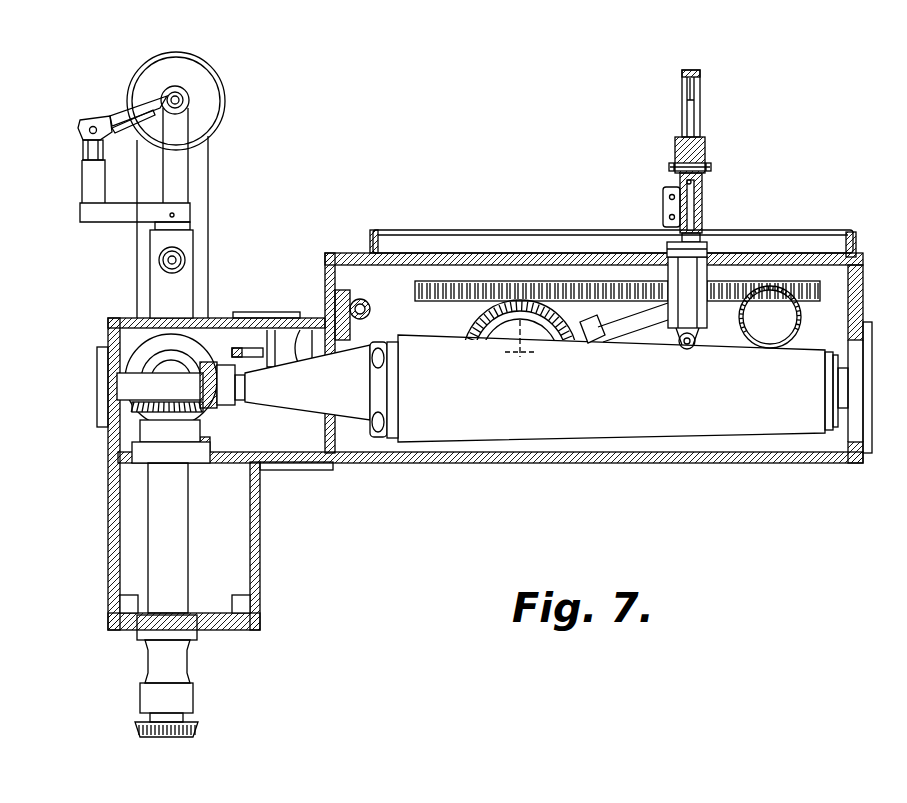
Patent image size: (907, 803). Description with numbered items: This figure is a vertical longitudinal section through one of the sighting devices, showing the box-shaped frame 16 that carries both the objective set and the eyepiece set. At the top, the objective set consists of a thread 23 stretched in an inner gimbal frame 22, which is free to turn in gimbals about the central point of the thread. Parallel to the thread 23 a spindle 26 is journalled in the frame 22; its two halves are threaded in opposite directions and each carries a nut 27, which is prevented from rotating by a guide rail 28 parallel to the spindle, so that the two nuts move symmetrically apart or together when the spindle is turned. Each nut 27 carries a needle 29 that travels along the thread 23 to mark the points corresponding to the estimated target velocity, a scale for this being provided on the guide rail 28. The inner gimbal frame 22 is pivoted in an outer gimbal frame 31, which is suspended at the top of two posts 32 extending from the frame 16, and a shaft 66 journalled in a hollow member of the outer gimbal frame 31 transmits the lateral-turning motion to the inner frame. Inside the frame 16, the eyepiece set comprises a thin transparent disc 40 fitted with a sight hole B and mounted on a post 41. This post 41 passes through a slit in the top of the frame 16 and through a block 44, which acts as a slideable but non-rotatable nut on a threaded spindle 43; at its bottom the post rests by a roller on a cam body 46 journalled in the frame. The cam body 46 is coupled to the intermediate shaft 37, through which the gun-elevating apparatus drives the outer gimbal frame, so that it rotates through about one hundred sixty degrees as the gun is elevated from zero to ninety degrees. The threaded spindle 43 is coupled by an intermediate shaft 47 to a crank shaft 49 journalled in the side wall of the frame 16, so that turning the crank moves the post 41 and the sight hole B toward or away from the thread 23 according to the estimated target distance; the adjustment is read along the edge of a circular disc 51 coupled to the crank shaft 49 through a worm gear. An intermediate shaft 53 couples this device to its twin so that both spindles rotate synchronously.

The frame 16 is at (465, 258).
The frame 22 is at (120, 106).
The thread 23 is at (182, 96).
The spindle 26 is at (94, 127).
The nut 27 is at (79, 127).
The guide rail 28 is at (83, 155).
The needle 29 is at (158, 111).
The frame 31 is at (178, 177).
The post 32 is at (206, 192).
The shaft 37 is at (160, 500).
The transparent disc 40 is at (697, 121).
The post 41 is at (688, 268).
The threaded spindle 43 is at (418, 291).
The block 44 is at (704, 273).
The cam body 46 is at (697, 434).
The intermediate shaft 47 is at (360, 299).
The shaft 49 is at (516, 350).
The circular disc 51 is at (772, 334).
The intermediate shaft 53 is at (250, 348).
The shaft 66 is at (185, 259).
The sight hole B is at (702, 89).